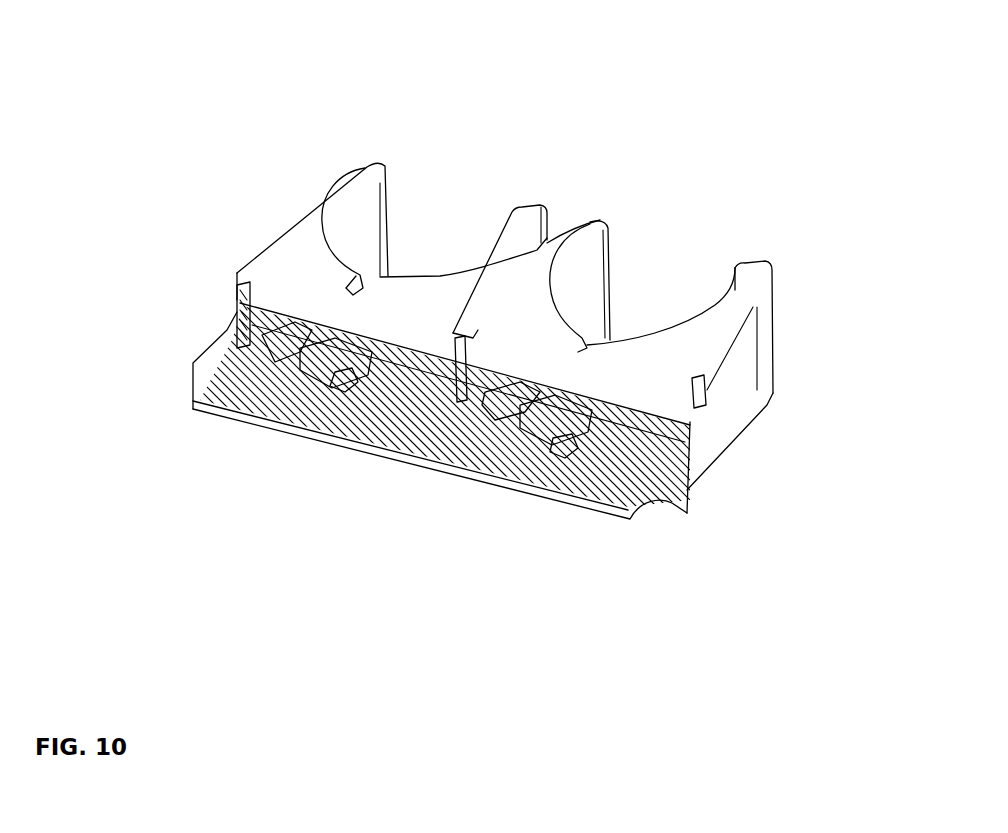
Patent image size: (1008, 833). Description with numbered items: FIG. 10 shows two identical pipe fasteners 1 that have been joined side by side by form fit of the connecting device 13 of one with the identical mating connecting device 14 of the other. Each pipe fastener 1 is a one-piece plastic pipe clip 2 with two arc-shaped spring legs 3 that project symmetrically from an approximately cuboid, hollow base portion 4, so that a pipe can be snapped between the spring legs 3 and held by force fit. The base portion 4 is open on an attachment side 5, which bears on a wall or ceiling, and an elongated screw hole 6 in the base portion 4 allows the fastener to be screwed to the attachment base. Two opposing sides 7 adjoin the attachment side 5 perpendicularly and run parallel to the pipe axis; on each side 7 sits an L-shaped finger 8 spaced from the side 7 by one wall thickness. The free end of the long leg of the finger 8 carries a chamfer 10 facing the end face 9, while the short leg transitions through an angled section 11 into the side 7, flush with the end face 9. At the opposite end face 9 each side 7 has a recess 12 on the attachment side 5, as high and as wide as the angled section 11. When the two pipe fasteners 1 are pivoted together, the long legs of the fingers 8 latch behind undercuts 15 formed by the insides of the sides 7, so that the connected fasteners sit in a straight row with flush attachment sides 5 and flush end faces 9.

The pipe fastener 1 is at (558, 137).
The pipe clip 2 is at (597, 180).
The spring legs 3 is at (323, 200).
The base portion 4 is at (350, 317).
The attachment side 5 is at (302, 452).
The screw hole 6 is at (226, 302).
The sides 7 is at (700, 395).
The finger 8 is at (787, 447).
The end face 9 is at (307, 258).
The chamfer 10 is at (720, 403).
The angled section 11 is at (460, 347).
The recess 12 is at (671, 537).
The connecting device 13 is at (720, 415).
The mating connecting device 14 is at (194, 340).
The undercuts 15 is at (677, 480).